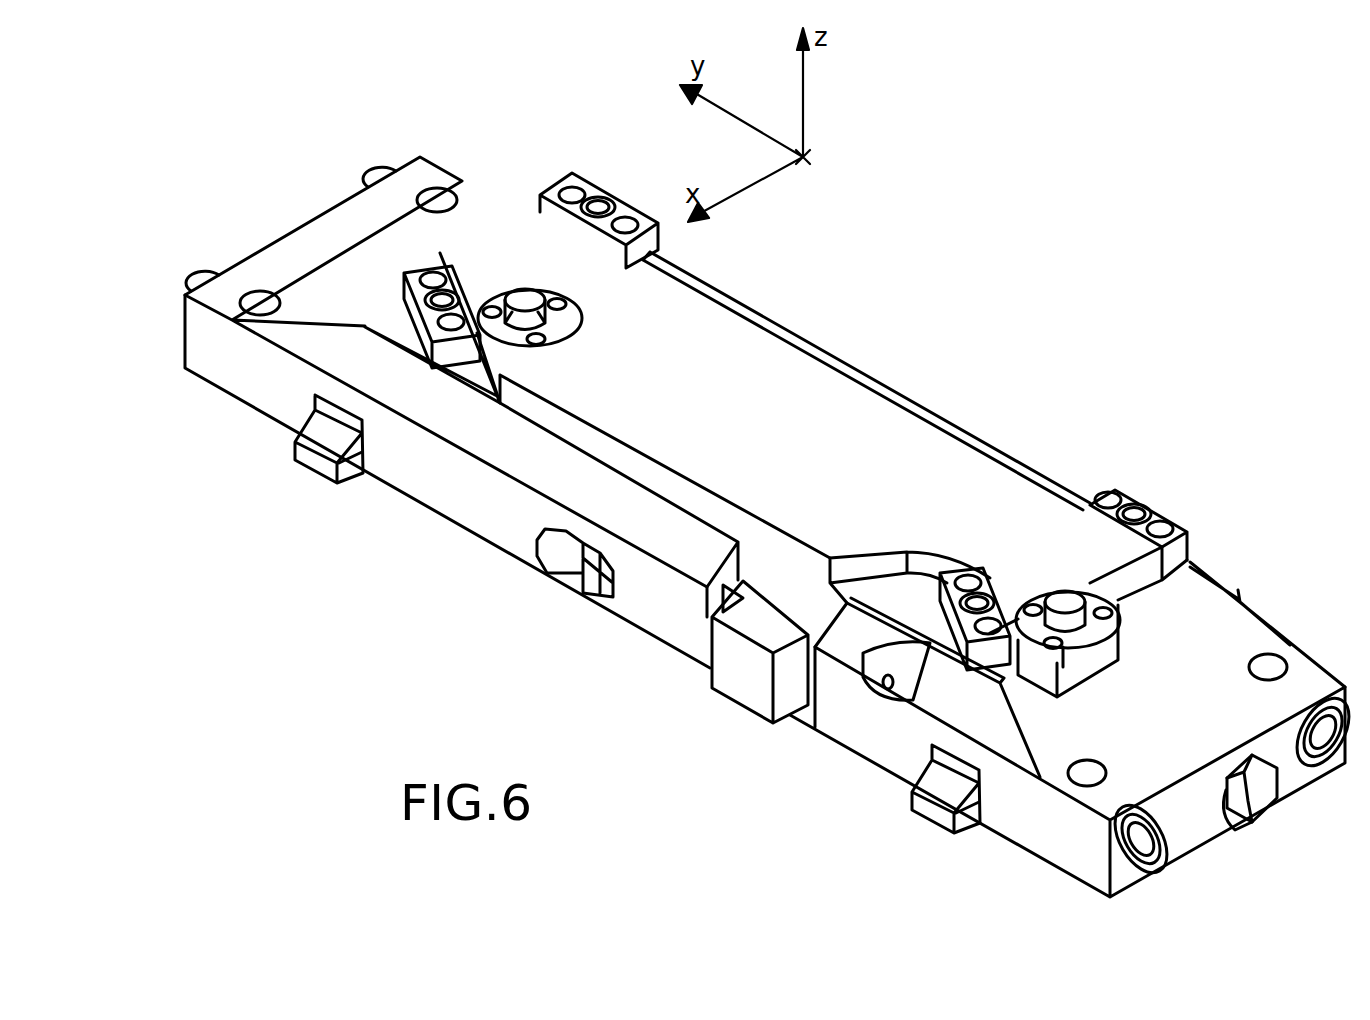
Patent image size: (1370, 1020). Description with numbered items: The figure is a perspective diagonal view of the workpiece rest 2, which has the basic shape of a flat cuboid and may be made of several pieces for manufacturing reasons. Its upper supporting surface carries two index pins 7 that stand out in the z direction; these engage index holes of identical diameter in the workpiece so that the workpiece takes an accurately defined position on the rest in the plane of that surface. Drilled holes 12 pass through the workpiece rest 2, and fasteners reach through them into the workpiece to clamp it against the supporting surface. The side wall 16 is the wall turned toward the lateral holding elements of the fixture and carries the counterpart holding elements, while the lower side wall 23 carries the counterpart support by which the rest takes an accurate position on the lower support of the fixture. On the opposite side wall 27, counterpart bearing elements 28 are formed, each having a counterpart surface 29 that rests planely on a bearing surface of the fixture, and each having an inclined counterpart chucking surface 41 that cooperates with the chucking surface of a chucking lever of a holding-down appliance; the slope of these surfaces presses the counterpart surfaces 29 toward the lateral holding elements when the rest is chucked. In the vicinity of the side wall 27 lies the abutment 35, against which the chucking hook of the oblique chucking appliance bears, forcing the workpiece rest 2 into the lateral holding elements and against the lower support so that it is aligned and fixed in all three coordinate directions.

The workpiece rest 2 is at (875, 374).
The index pin 7 is at (1060, 600).
The drilled hole 12 is at (1133, 507).
The side wall 16 is at (983, 437).
The lower side wall 23 is at (1180, 832).
The side wall 27 is at (510, 523).
The counterpart bearing element 28 is at (1250, 770).
The counterpart surface 29 is at (1257, 793).
The abutment 35 is at (598, 572).
The counterpart chucking surface 41 is at (943, 789).